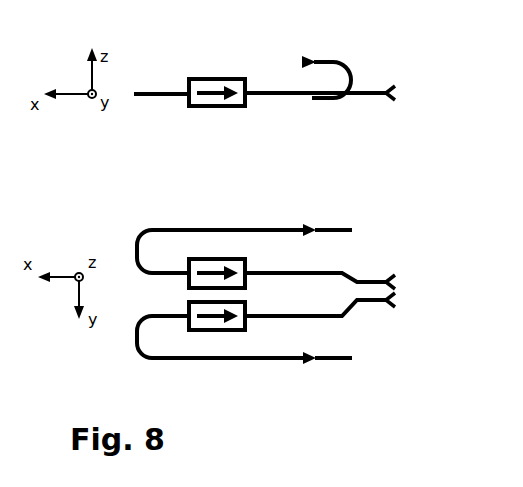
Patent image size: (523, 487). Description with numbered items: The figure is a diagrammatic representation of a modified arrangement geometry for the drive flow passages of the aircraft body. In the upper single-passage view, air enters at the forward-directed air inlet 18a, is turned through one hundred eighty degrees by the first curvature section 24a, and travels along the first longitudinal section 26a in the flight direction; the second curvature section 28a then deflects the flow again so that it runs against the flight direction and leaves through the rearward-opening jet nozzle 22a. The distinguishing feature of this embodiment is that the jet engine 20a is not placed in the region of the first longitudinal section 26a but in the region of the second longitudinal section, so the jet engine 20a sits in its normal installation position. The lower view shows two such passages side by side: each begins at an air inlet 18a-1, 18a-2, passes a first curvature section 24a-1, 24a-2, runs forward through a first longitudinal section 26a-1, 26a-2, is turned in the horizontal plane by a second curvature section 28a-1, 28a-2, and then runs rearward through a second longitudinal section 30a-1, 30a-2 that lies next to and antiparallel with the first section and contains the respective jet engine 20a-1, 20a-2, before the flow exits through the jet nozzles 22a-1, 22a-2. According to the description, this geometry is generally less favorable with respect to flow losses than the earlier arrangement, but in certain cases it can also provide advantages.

The air inlet 18a is at (310, 51).
The jet engine 20a is at (217, 80).
The jet nozzle 22a is at (404, 82).
The first curvature section 24a is at (345, 72).
The first longitudinal section 26a is at (316, 104).
The second curvature section 28a is at (161, 82).
The air inlet 18a-1 is at (313, 218).
The air inlet 18a-2 is at (308, 371).
The jet engine 20a-1 is at (217, 264).
The jet engine 20a-2 is at (217, 329).
The jet nozzle 22a-1 is at (395, 272).
The jet nozzle 22a-2 is at (395, 314).
The first curvature section 24a-1 is at (357, 227).
The first curvature section 24a-2 is at (357, 362).
The first longitudinal section 26a-1 is at (228, 220).
The first longitudinal section 26a-2 is at (228, 372).
The second curvature section 28a-1 is at (138, 250).
The second curvature section 28a-2 is at (138, 342).
The second longitudinal section 30a-1 is at (316, 266).
The second longitudinal section 30a-2 is at (316, 319).